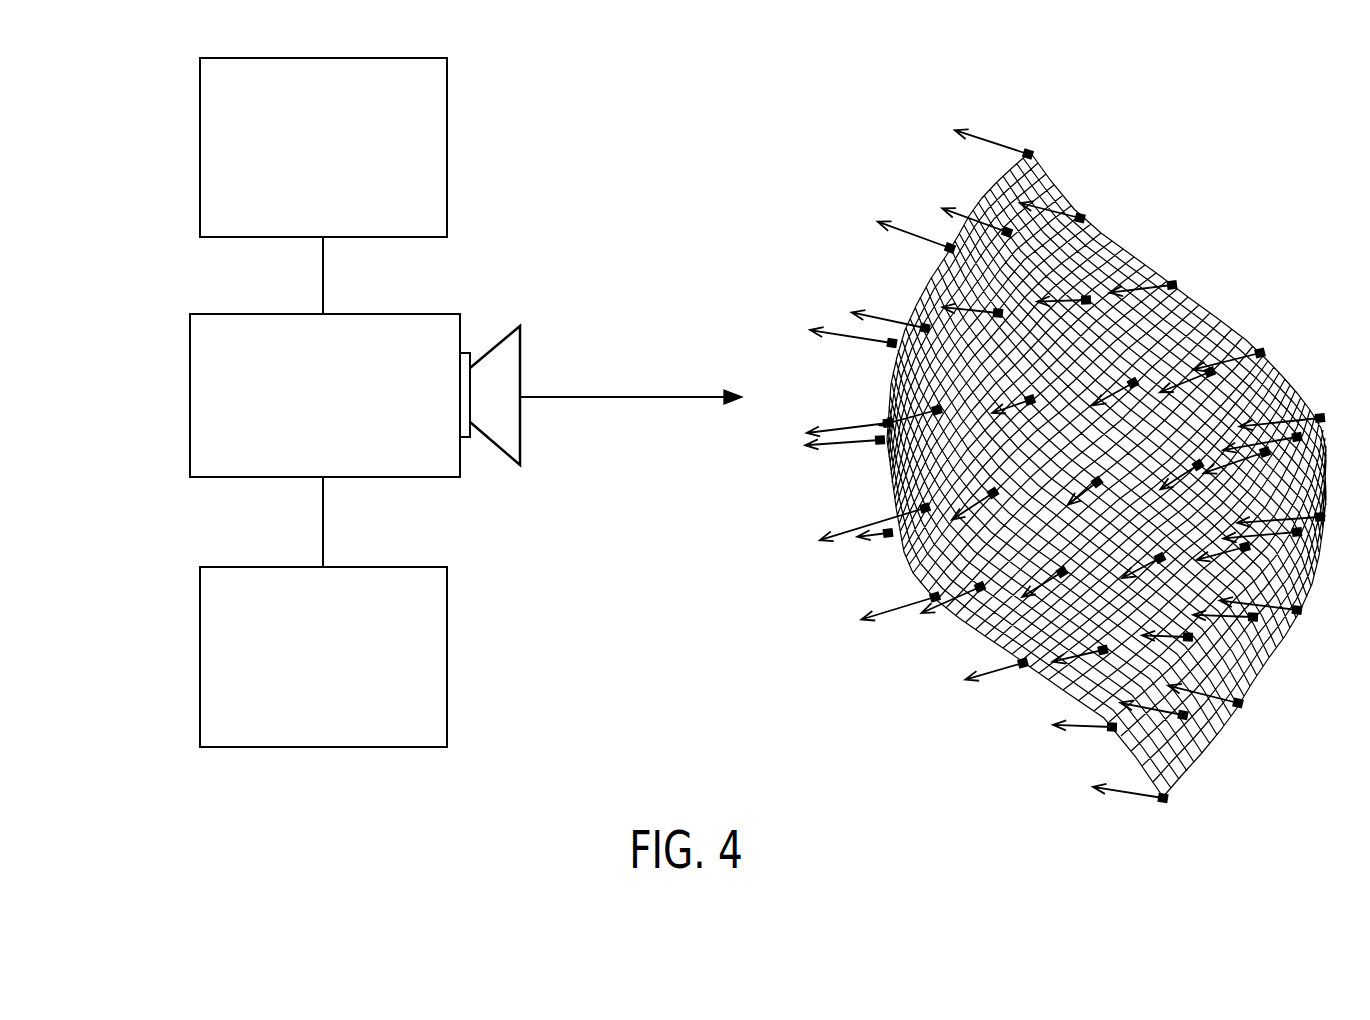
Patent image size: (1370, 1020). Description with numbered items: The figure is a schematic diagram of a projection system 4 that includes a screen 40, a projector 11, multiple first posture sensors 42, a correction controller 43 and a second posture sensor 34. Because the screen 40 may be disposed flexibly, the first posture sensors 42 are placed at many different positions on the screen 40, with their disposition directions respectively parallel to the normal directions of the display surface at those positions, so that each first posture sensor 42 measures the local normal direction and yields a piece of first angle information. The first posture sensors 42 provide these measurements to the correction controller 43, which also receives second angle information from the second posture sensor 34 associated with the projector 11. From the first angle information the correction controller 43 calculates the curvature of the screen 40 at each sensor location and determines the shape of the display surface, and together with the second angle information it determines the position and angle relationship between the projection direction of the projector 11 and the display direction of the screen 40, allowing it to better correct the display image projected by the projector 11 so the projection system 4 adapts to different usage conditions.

The projection system 4 is at (109, 815).
The second posture sensor 34 is at (323, 147).
The projector 11 is at (355, 395).
The correction controller 43 is at (323, 657).
The screen 40 is at (1141, 262).
The first posture sensors 42 is at (1032, 149).